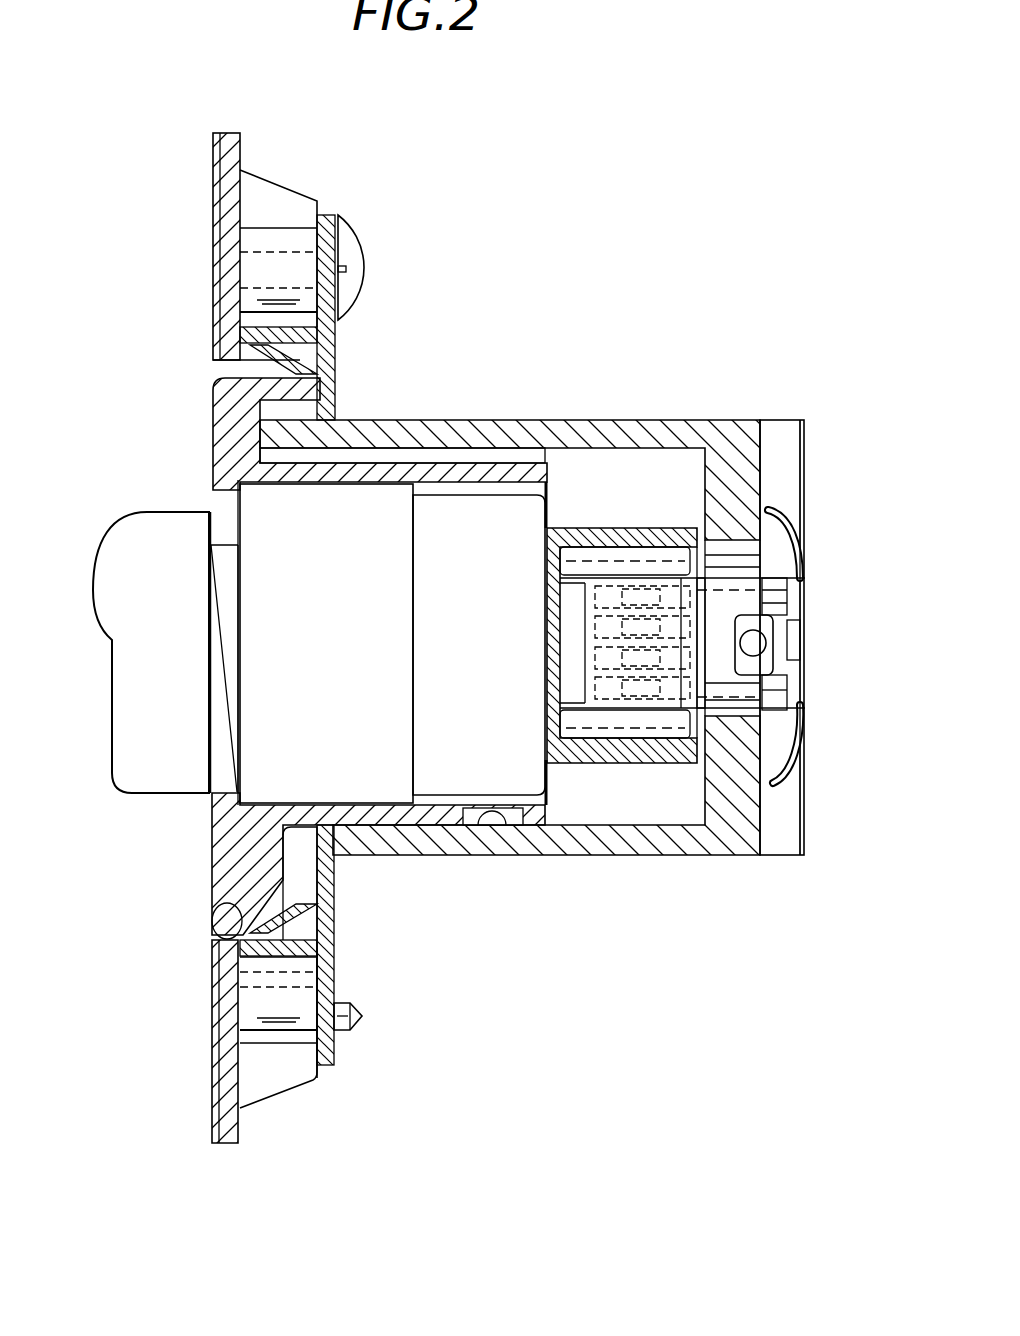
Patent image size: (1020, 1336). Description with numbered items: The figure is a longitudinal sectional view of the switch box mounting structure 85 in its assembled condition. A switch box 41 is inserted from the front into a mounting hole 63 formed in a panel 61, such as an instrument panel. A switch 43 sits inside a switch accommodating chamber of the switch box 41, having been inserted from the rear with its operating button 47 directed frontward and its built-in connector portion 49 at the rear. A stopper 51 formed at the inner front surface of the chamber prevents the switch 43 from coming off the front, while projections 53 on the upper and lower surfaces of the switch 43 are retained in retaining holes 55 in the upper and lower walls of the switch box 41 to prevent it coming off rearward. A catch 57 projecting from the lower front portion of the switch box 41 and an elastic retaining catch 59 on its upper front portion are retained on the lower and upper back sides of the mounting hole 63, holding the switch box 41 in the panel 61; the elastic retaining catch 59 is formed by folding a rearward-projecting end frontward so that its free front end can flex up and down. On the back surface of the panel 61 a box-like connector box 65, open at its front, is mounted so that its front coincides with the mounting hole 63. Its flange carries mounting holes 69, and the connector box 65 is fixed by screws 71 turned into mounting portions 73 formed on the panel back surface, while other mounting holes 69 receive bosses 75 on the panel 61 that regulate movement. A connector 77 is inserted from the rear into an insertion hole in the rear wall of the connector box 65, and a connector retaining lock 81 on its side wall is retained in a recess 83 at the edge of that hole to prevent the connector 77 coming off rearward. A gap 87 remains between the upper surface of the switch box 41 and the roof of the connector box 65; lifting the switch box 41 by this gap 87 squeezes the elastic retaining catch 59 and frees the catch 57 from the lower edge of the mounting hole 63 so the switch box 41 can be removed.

The switch box 41 is at (212, 447).
The switch 43 is at (392, 790).
The operating button 47 is at (112, 740).
The built-in connector portion 49 is at (637, 763).
The stopper 51 is at (250, 797).
The projection 53 is at (505, 475).
The retaining hole 55 is at (483, 468).
The catch 57 is at (287, 960).
The elastic retaining catch 59 is at (333, 368).
The panel 61 is at (212, 205).
The mounting hole 63 is at (210, 912).
The connector box 65 is at (705, 421).
The mounting hole 69 is at (313, 1013).
The screw 71 is at (353, 243).
The mounting portion 73 is at (272, 228).
The boss 75 is at (362, 1016).
The connector 77 is at (800, 598).
The connector retaining lock 81 is at (800, 658).
The recess 83 is at (800, 808).
The switch box mounting structure 85 is at (604, 222).
The gap 87 is at (425, 455).